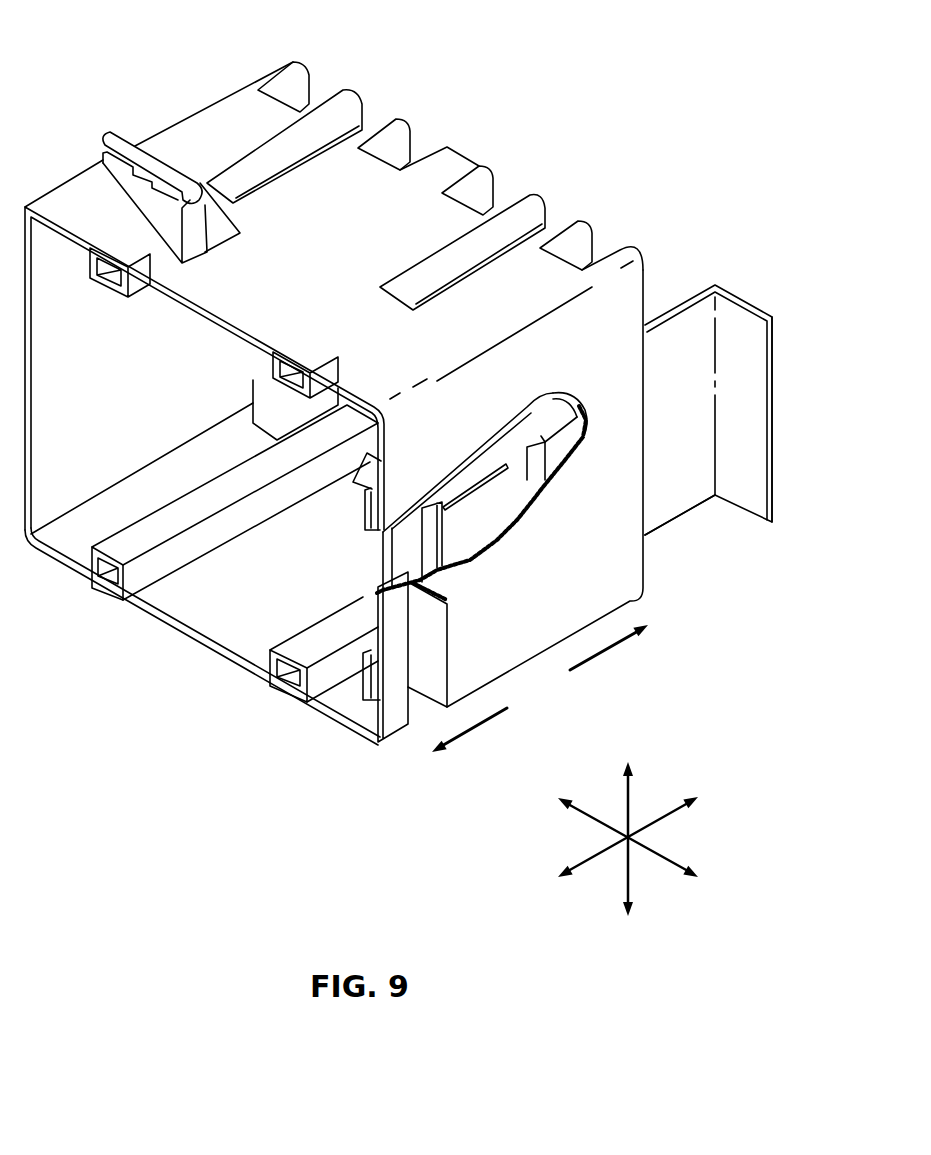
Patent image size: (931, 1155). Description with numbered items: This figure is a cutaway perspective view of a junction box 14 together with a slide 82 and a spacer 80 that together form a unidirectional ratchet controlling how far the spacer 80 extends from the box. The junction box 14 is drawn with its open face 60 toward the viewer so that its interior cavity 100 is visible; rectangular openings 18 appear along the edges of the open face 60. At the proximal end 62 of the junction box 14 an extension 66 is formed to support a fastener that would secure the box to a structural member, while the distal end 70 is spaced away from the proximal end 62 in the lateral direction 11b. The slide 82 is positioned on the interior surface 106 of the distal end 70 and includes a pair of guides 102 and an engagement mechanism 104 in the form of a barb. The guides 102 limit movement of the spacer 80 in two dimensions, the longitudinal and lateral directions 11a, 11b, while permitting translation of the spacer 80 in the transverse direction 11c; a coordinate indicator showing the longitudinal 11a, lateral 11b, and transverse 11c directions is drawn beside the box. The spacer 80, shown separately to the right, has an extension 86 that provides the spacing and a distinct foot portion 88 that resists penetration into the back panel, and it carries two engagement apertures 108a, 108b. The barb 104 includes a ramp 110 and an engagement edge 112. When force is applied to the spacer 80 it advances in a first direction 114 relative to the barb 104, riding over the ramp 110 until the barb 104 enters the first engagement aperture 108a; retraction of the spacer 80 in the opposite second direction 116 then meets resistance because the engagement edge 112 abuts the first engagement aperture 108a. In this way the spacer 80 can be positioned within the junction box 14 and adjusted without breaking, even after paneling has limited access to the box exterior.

The junction box 14 is at (334, 187).
The rectangular openings 18 is at (200, 495).
The open face 60 is at (204, 476).
The proximal end 62 is at (218, 81).
The extension 66 is at (200, 235).
The distal end 70 is at (563, 588).
The spacer 80 is at (741, 283).
The slide 82 is at (321, 558).
The extension 86 is at (673, 500).
The foot portion 88 is at (760, 412).
The interior cavity 100 is at (235, 503).
The guides 102 is at (366, 503).
The engagement mechanism 104 is at (544, 495).
The interior surface 106 is at (368, 653).
The first engagement aperture 108a is at (584, 471).
The second engagement aperture 108b is at (470, 542).
The ramp 110 is at (540, 457).
The engagement edge 112 is at (540, 433).
The first direction 114 is at (612, 648).
The second direction 116 is at (483, 722).
The longitudinal direction 11a is at (631, 792).
The lateral direction 11b is at (670, 868).
The transverse direction 11c is at (672, 818).